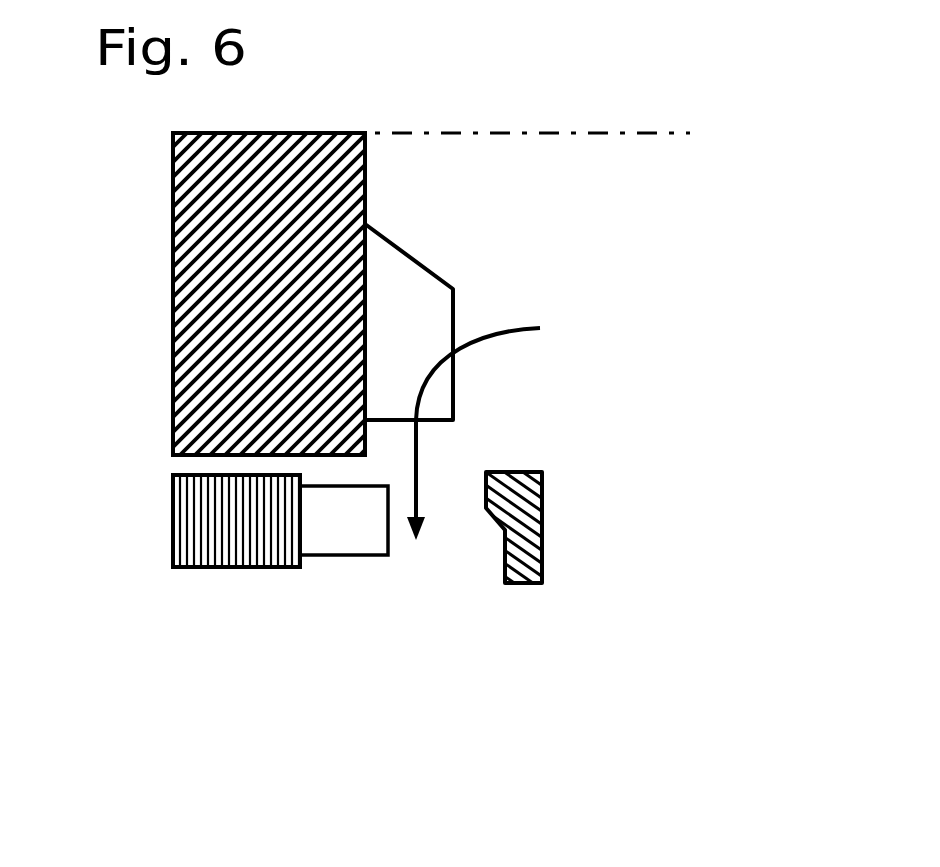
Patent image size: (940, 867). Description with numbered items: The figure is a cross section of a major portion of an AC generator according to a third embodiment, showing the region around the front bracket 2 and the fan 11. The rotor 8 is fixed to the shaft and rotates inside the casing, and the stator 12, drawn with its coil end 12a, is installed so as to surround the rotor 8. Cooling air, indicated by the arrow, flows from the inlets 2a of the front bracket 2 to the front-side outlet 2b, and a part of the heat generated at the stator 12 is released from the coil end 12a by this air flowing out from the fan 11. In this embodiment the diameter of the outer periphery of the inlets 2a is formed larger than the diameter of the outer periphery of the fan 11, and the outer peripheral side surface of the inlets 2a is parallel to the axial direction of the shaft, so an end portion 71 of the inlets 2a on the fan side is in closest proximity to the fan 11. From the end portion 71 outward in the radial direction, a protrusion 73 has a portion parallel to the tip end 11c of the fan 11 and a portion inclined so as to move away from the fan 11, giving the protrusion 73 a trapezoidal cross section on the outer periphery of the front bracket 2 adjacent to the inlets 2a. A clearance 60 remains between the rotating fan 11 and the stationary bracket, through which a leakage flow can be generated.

The rotor 8 is at (173, 265).
The fan 11 is at (420, 292).
The tip end of the fan 11c is at (453, 370).
The stator 12 is at (200, 567).
The coil end 12a is at (370, 556).
The front bracket 2 is at (539, 584).
The inlets 2a is at (612, 320).
The front-side outlet 2b is at (478, 608).
The end portion 71 is at (490, 477).
The protrusion 73 is at (542, 493).
The clearance 60 is at (542, 528).